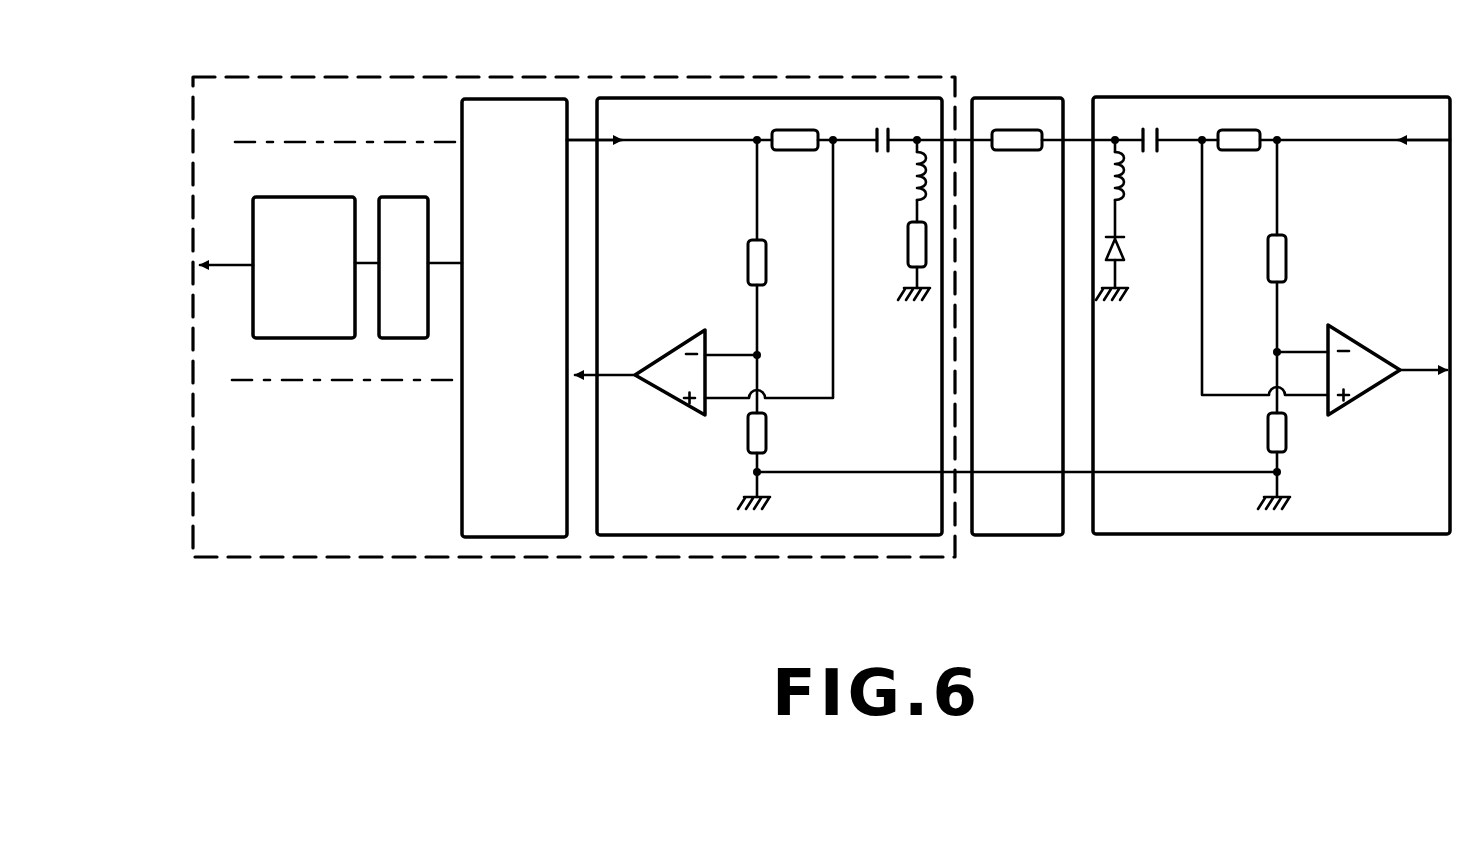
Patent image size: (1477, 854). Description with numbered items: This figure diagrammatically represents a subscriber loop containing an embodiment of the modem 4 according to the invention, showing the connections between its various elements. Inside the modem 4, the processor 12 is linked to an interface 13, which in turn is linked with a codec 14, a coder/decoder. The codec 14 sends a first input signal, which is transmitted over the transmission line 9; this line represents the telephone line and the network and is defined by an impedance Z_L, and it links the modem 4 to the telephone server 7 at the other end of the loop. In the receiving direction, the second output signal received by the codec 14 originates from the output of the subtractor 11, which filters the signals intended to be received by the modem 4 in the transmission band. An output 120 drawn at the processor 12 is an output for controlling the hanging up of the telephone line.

The modem 4 is at (648, 77).
The telephone server 7 is at (1300, 97).
The transmission line 9 is at (1015, 97).
The subtractor 11 is at (668, 396).
The processor 12 is at (287, 197).
The interface 13 is at (397, 197).
The codec 14 is at (512, 537).
The output 120 is at (253, 263).